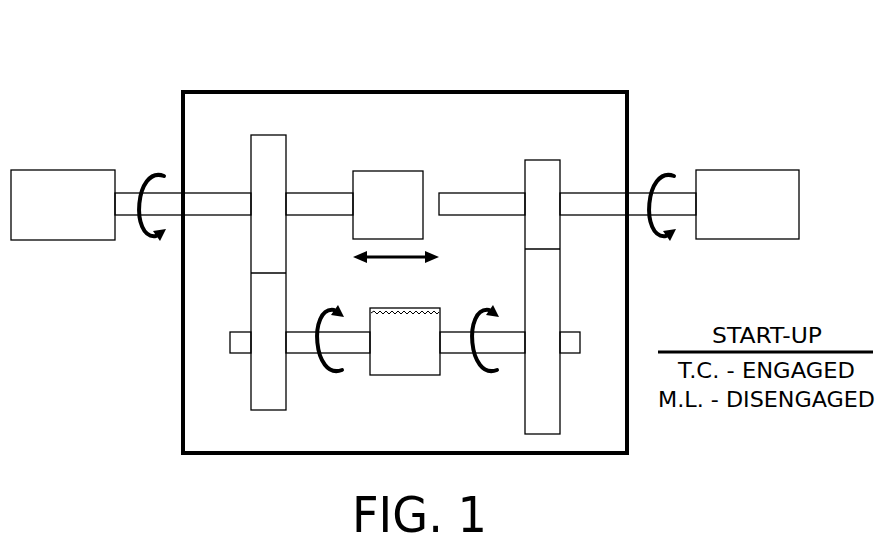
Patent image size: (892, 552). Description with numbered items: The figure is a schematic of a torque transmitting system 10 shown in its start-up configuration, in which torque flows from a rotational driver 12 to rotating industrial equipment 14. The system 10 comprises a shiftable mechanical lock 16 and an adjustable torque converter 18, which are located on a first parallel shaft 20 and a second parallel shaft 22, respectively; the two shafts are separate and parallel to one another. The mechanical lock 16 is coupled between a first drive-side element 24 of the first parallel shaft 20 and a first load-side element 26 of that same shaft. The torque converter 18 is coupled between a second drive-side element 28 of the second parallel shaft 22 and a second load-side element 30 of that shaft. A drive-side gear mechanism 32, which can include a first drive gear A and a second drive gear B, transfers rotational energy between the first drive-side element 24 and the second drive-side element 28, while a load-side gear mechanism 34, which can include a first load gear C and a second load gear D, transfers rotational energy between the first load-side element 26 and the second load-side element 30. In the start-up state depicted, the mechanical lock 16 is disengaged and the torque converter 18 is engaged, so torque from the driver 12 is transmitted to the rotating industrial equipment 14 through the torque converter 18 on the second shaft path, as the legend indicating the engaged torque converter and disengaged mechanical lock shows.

The torque transmitting system 10 is at (613, 52).
The rotational driver 12 is at (92, 170).
The rotating industrial equipment 14 is at (773, 170).
The shiftable mechanical lock 16 is at (397, 170).
The adjustable torque converter 18 is at (392, 375).
The first parallel shaft 20 is at (208, 180).
The second parallel shaft 22 is at (238, 368).
The first drive-side element 24 is at (320, 193).
The first load-side element 26 is at (472, 193).
The second drive-side element 28 is at (347, 353).
The second load-side element 30 is at (497, 355).
The drive-side gear mechanism 32 is at (268, 121).
The load-side gear mechanism 34 is at (540, 146).